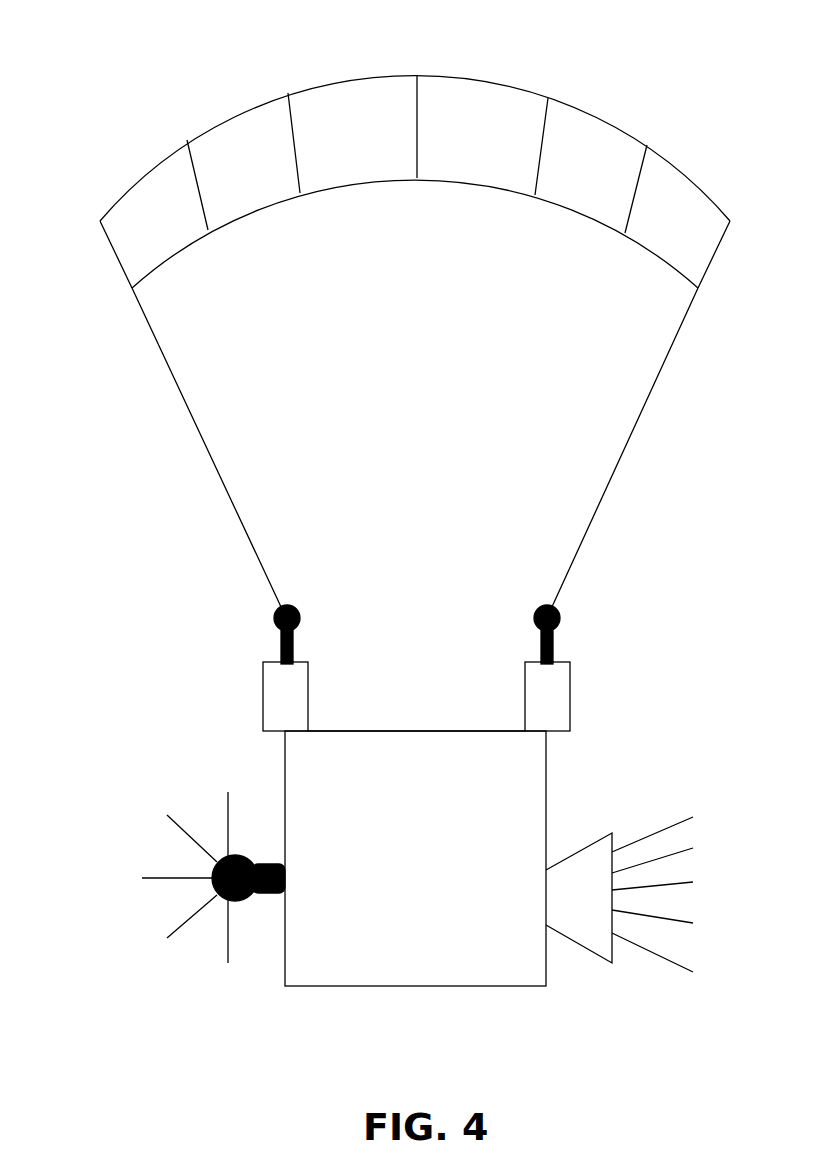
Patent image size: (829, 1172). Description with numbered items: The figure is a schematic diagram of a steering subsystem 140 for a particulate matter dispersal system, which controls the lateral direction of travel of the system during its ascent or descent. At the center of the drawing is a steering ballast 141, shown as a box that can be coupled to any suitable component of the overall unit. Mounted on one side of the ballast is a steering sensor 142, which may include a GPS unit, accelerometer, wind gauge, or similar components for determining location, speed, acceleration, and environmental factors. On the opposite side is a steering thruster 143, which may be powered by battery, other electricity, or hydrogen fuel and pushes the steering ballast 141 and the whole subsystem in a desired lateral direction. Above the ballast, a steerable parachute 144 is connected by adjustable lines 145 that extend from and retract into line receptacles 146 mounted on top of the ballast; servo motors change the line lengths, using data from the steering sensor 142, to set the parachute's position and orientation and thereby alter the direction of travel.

The steering subsystem 140 is at (168, 108).
The steering ballast 141 is at (418, 987).
The steering sensor 142 is at (237, 902).
The steering thruster 143 is at (572, 938).
The steerable parachute 144 is at (612, 120).
The adjustable lines 145 is at (200, 433).
The line receptacles 146 is at (308, 673).